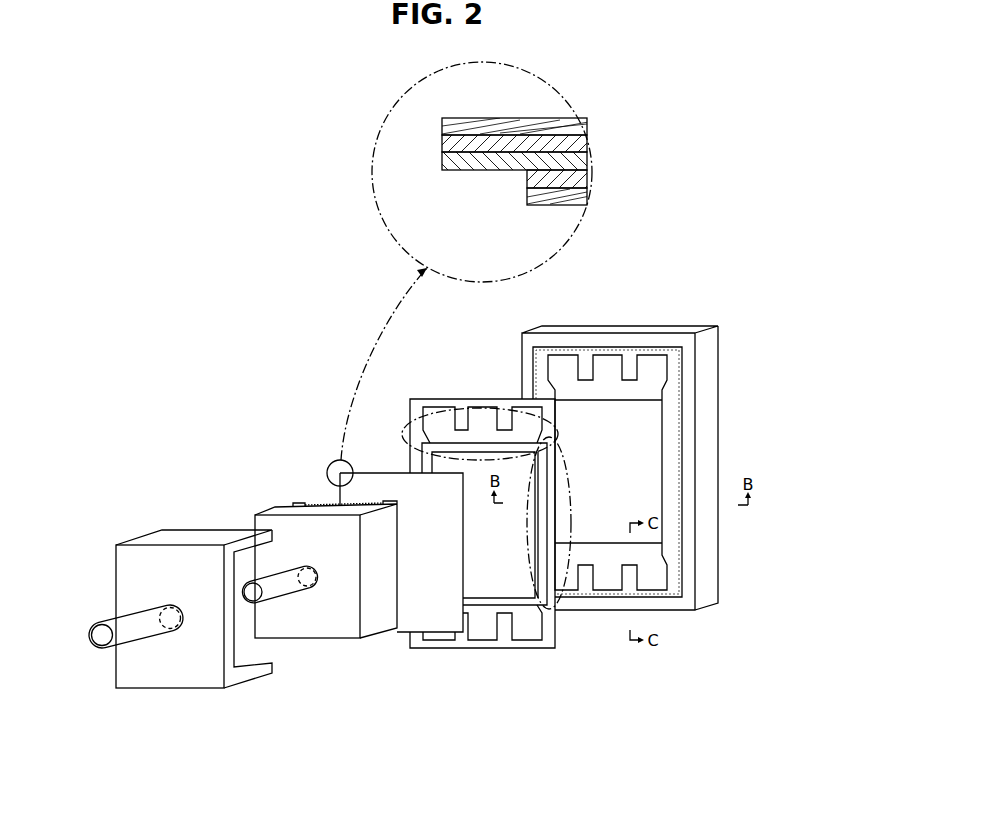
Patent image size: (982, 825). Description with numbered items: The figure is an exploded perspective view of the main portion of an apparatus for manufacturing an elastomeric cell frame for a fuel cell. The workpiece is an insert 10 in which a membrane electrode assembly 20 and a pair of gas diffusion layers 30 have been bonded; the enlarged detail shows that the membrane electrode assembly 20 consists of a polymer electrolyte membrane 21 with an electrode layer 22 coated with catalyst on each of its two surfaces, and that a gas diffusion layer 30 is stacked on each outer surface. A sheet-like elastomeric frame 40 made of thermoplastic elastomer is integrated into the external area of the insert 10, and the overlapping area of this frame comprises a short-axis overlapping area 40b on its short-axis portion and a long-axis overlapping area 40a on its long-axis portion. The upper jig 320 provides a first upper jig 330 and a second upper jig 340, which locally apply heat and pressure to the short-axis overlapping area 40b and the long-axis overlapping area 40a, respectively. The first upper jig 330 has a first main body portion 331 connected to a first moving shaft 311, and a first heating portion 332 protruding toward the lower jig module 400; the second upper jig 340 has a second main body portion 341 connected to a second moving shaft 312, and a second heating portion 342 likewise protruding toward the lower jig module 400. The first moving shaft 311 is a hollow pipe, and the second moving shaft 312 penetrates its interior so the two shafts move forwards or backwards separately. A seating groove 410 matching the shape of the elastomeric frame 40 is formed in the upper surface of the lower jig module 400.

The insert 10 is at (525, 403).
The membrane electrode assembly 20 is at (557, 162).
The polymer electrolyte membrane 21 is at (576, 165).
The electrode layer 22 is at (576, 143).
The gas diffusion layer 30 is at (578, 128).
The elastomeric frame 40 is at (505, 521).
The long-axis overlapping area 40a is at (573, 527).
The short-axis overlapping area 40b is at (483, 407).
The first moving shaft 311 is at (131, 632).
The second moving shaft 312 is at (296, 583).
The upper jig 320 is at (393, 603).
The first upper jig 330 is at (194, 654).
The first main body portion 331 is at (172, 678).
The first heating portion 332 is at (248, 638).
The second upper jig 340 is at (291, 533).
The second main body portion 341 is at (259, 525).
The second heating portion 342 is at (320, 475).
The lower jig module 400 is at (650, 468).
The seating groove 410 is at (642, 447).